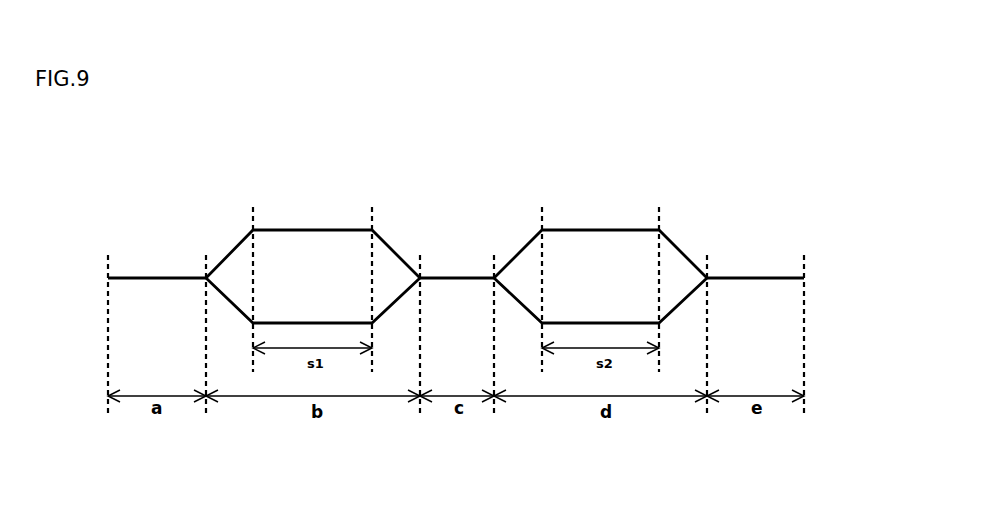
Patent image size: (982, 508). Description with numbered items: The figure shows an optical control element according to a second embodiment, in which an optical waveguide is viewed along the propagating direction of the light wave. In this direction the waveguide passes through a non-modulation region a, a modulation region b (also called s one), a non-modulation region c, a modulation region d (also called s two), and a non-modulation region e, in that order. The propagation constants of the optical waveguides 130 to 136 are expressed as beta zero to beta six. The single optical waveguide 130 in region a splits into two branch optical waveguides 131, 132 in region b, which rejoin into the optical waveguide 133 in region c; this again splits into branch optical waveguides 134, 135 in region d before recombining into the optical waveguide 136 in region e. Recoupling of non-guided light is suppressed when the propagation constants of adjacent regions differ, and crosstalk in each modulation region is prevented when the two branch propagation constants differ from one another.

The optical waveguide 130 is at (177, 278).
The optical waveguide 131 is at (340, 230).
The optical waveguide 132 is at (340, 323).
The optical waveguide 133 is at (475, 278).
The optical waveguide 134 is at (627, 230).
The optical waveguide 135 is at (628, 323).
The optical waveguide 136 is at (770, 278).